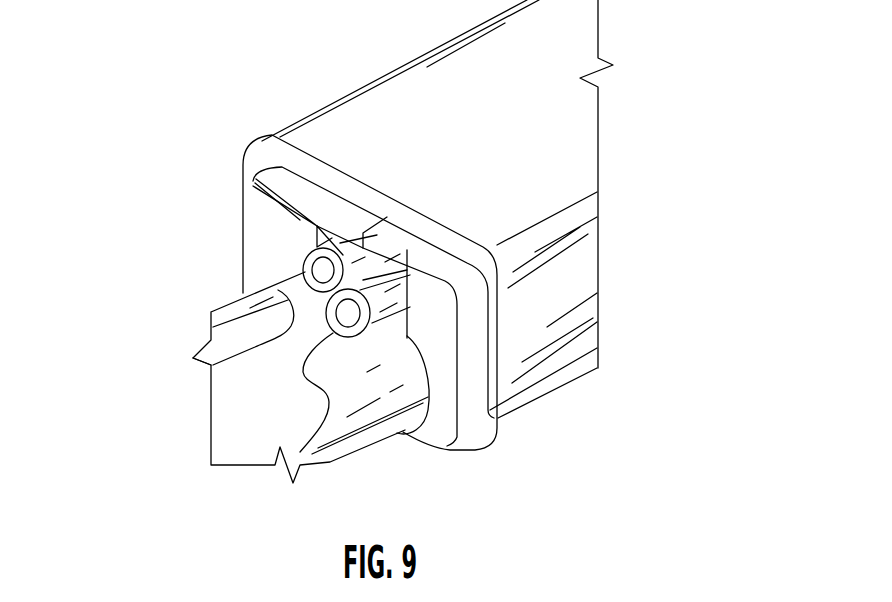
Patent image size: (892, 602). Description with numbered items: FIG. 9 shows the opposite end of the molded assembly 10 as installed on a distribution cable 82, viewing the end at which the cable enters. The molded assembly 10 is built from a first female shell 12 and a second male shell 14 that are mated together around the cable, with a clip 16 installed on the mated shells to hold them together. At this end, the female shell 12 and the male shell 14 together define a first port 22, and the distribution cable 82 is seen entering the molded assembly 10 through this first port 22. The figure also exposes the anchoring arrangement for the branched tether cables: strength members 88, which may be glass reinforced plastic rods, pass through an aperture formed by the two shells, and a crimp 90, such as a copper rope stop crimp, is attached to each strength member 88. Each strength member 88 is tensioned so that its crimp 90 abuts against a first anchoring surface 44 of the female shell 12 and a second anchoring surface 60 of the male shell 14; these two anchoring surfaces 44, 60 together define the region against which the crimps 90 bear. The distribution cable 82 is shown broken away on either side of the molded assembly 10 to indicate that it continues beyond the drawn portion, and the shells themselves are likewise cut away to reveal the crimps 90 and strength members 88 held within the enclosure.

The molded assembly 10 is at (289, 91).
The first female shell 12 is at (262, 217).
The second male shell 14 is at (473, 407).
The clip 16 is at (567, 178).
The first port 22 is at (403, 442).
The first anchoring surface 44 is at (310, 235).
The second anchoring surface 60 is at (312, 276).
The distribution cable 82 is at (237, 419).
The strength members 88 is at (213, 360).
The crimp 90 is at (300, 200).